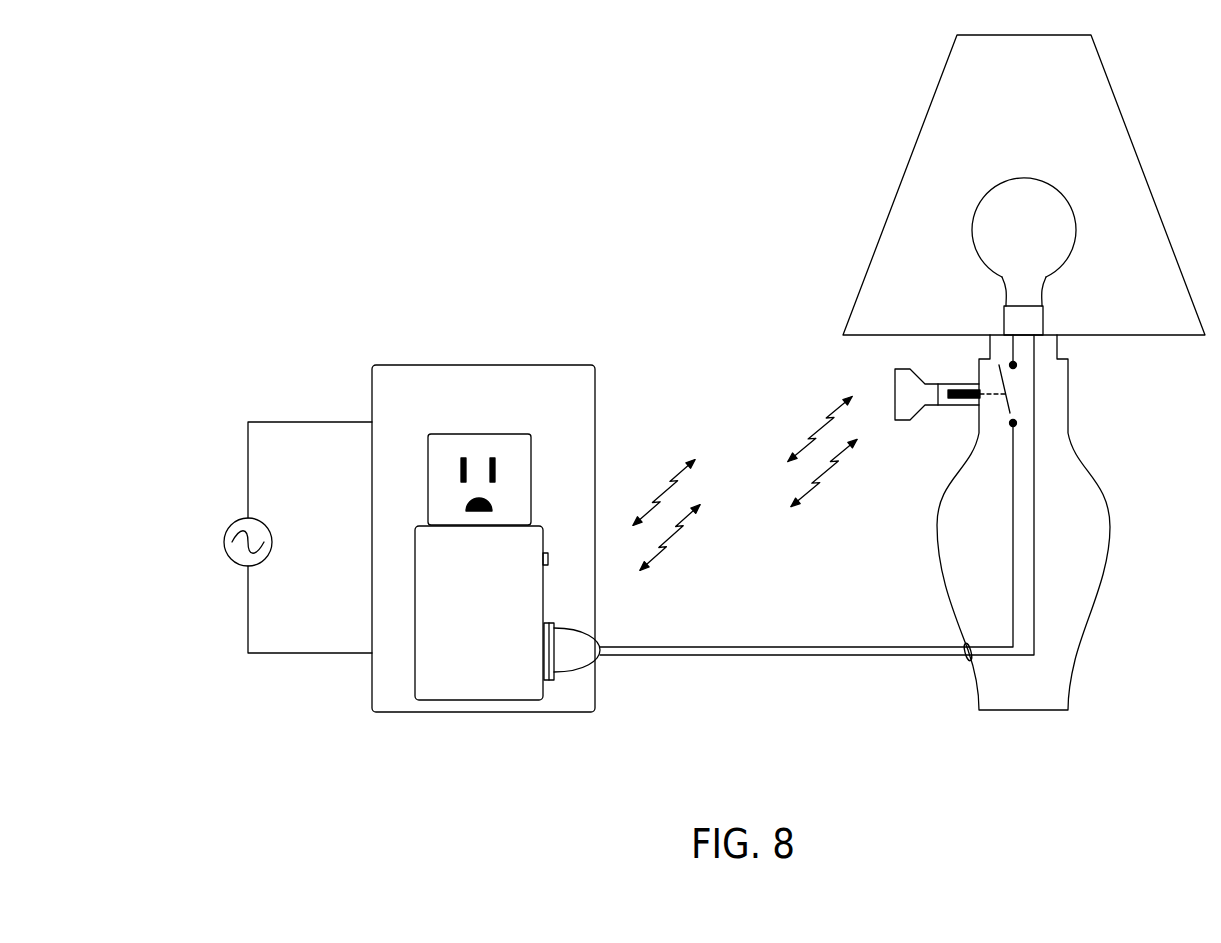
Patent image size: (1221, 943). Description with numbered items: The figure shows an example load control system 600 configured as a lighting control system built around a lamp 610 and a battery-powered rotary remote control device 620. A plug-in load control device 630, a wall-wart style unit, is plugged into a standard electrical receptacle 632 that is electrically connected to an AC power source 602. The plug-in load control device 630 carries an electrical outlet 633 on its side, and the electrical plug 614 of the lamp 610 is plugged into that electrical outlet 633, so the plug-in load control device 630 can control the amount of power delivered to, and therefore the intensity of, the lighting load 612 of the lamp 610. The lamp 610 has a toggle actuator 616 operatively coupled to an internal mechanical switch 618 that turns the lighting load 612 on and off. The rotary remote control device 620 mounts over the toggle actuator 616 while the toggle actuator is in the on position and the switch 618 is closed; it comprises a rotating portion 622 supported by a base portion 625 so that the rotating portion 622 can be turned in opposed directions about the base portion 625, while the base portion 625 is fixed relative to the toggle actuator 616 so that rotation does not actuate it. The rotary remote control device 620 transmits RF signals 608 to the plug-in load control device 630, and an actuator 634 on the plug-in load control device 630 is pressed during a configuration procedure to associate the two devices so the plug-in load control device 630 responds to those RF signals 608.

The load control system 600 is at (262, 133).
The AC power source 602 is at (261, 528).
The RF signals 608 is at (663, 495).
The lamp 610 is at (943, 567).
The lighting load 612 is at (977, 208).
The electrical plug 614 is at (580, 652).
The toggle actuator 616 is at (964, 399).
The internal mechanical switch 618 is at (1020, 407).
The rotary remote control device 620 is at (902, 370).
The rotating portion 622 is at (908, 395).
The base portion 625 is at (942, 399).
The plug-in load control device 630 is at (469, 680).
The electrical receptacle 632 is at (474, 450).
The electrical outlet 633 is at (547, 650).
The actuator 634 is at (548, 559).